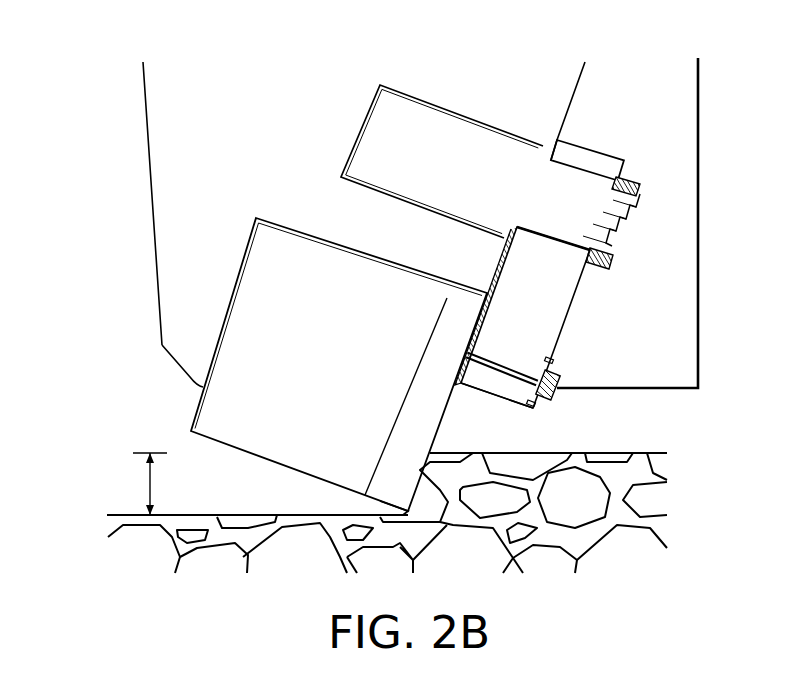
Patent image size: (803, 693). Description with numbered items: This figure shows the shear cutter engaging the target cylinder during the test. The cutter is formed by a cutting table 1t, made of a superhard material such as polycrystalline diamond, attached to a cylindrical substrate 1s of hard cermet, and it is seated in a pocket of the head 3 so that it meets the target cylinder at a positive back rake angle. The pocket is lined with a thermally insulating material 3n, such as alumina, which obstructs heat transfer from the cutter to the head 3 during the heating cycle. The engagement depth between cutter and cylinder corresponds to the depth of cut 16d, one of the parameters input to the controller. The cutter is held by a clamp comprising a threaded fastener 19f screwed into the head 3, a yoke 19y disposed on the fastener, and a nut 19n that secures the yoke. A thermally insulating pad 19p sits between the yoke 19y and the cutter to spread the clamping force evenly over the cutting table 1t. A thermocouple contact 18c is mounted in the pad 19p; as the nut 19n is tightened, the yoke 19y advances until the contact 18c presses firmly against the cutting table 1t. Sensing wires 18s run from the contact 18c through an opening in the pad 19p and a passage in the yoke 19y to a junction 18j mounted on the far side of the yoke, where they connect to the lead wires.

The head 3 is at (158, 146).
The thermally insulating material 3n is at (200, 387).
The cylindrical substrate 1s is at (270, 457).
The cutting table 1t is at (383, 507).
The depth of cut 16d is at (147, 483).
The contact 18c is at (468, 373).
The junction 18j is at (553, 392).
The sensing wires 18s is at (513, 380).
The threaded fastener 19f is at (590, 213).
The nut 19n is at (634, 181).
The pad 19p is at (453, 395).
The yoke 19y is at (548, 317).